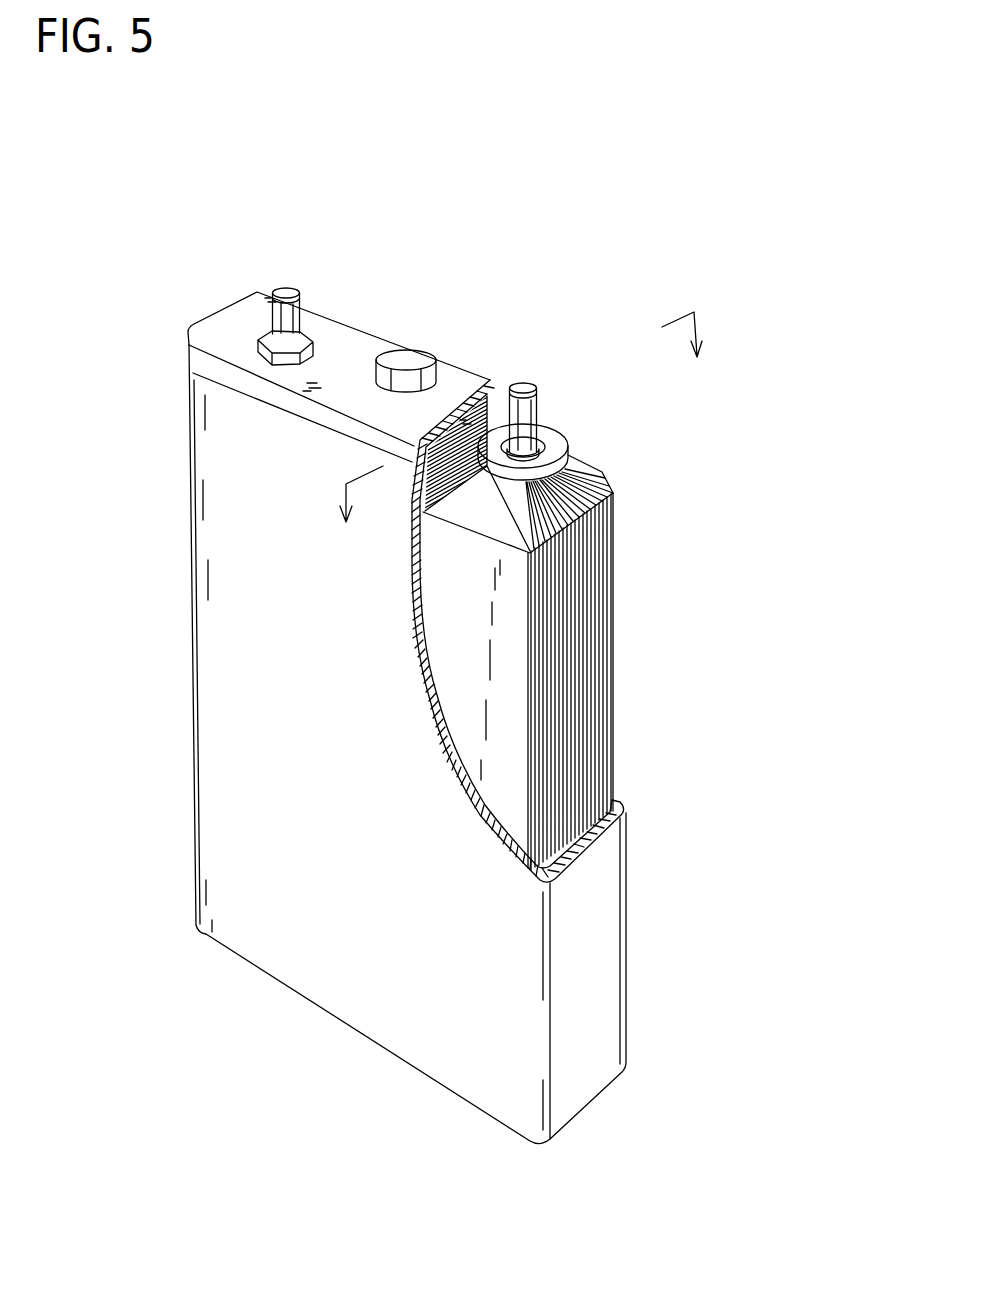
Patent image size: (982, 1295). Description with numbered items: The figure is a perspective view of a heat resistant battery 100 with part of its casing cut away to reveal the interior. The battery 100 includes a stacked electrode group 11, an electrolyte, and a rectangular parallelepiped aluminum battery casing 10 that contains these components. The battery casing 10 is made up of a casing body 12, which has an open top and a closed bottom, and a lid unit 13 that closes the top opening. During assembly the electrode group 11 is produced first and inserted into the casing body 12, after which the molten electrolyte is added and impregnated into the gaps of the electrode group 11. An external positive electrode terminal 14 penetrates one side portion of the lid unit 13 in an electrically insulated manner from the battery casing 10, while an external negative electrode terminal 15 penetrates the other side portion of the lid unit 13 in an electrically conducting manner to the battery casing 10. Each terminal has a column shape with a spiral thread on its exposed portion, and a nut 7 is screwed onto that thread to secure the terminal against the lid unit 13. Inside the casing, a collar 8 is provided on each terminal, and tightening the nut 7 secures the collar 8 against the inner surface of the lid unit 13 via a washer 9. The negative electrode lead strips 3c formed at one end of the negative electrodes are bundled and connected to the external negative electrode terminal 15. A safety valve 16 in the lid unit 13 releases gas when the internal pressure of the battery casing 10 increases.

The heat resistant battery 100 is at (583, 232).
The battery casing 10 is at (386, 238).
The casing body 12 is at (313, 567).
The lid unit 13 is at (342, 335).
The nut 7 is at (258, 333).
The external positive electrode terminal 14 is at (281, 291).
The safety valve 16 is at (412, 358).
The washer 9 is at (504, 440).
The external negative electrode terminal 15 is at (520, 390).
The collar 8 is at (550, 433).
The negative electrode lead strip 3c is at (582, 478).
The electrode group 11 is at (583, 578).